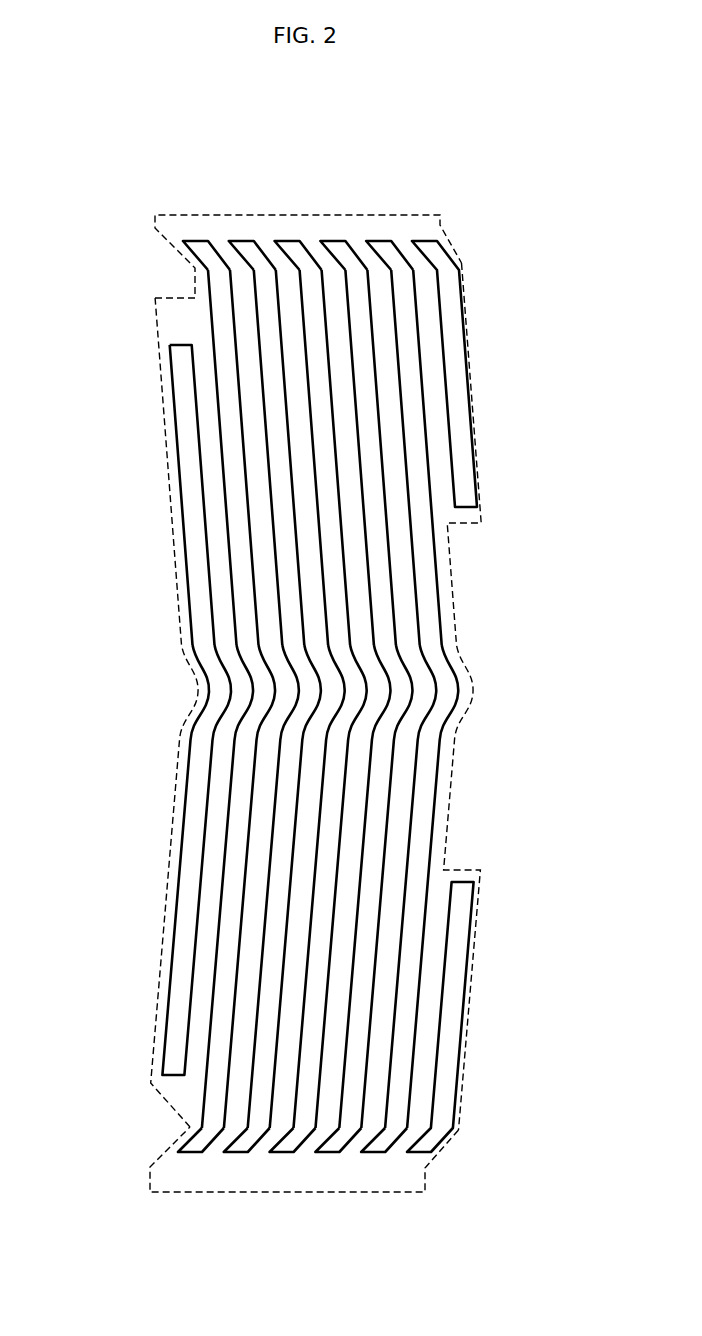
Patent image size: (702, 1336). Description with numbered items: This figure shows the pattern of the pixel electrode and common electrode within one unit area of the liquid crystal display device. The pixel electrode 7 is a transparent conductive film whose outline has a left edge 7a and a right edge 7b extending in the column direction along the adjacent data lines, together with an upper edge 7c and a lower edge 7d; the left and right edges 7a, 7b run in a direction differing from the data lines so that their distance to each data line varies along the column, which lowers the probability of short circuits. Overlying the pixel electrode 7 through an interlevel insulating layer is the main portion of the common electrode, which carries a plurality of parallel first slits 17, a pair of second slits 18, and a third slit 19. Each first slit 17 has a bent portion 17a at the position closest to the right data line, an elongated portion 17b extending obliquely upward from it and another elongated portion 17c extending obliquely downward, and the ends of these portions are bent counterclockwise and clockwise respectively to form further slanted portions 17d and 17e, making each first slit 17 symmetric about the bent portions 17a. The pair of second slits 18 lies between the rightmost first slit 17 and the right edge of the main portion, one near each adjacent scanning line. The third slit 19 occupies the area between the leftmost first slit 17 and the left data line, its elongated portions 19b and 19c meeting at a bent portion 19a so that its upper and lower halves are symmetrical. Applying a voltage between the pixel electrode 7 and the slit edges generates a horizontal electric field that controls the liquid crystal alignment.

The pixel electrode 7 is at (304, 685).
The left edge 7a is at (148, 495).
The right edge 7b is at (469, 617).
The upper edge 7c is at (288, 205).
The lower edge 7d is at (258, 1200).
The first slits 17 is at (267, 667).
The bent portion 17a is at (446, 682).
The elongated portion 17b is at (418, 482).
The elongated portion 17c is at (419, 860).
The further slanted portion 17d is at (431, 252).
The further slanted portion 17e is at (396, 1128).
The second slits 18 is at (462, 458).
The third slit 19 is at (157, 710).
The bent portion 19a is at (203, 690).
The elongated portion 19b is at (180, 376).
The elongated portion 19c is at (178, 992).